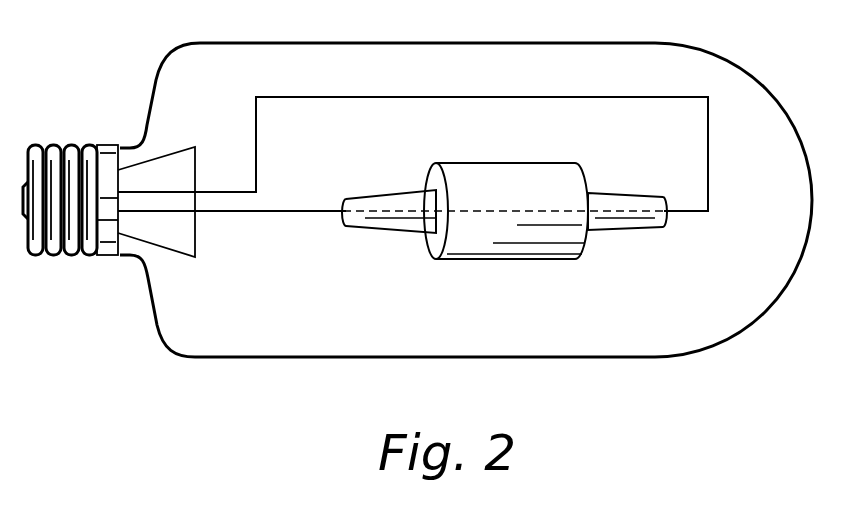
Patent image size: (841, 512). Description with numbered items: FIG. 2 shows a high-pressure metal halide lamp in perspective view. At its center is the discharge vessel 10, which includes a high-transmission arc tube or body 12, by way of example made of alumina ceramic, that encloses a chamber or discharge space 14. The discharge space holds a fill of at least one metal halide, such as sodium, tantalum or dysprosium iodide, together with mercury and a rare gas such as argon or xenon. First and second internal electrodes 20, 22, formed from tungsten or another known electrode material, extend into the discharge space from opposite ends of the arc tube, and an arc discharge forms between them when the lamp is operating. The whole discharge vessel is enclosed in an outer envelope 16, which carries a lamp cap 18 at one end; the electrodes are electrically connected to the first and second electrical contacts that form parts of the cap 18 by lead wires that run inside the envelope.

The discharge vessel 10 is at (405, 158).
The arc tube body 12 is at (512, 183).
The discharge space 14 is at (507, 210).
The outer envelope 16 is at (290, 358).
The lamp cap 18 is at (67, 256).
The first internal electrode 20 is at (289, 213).
The second internal electrode 22 is at (708, 154).